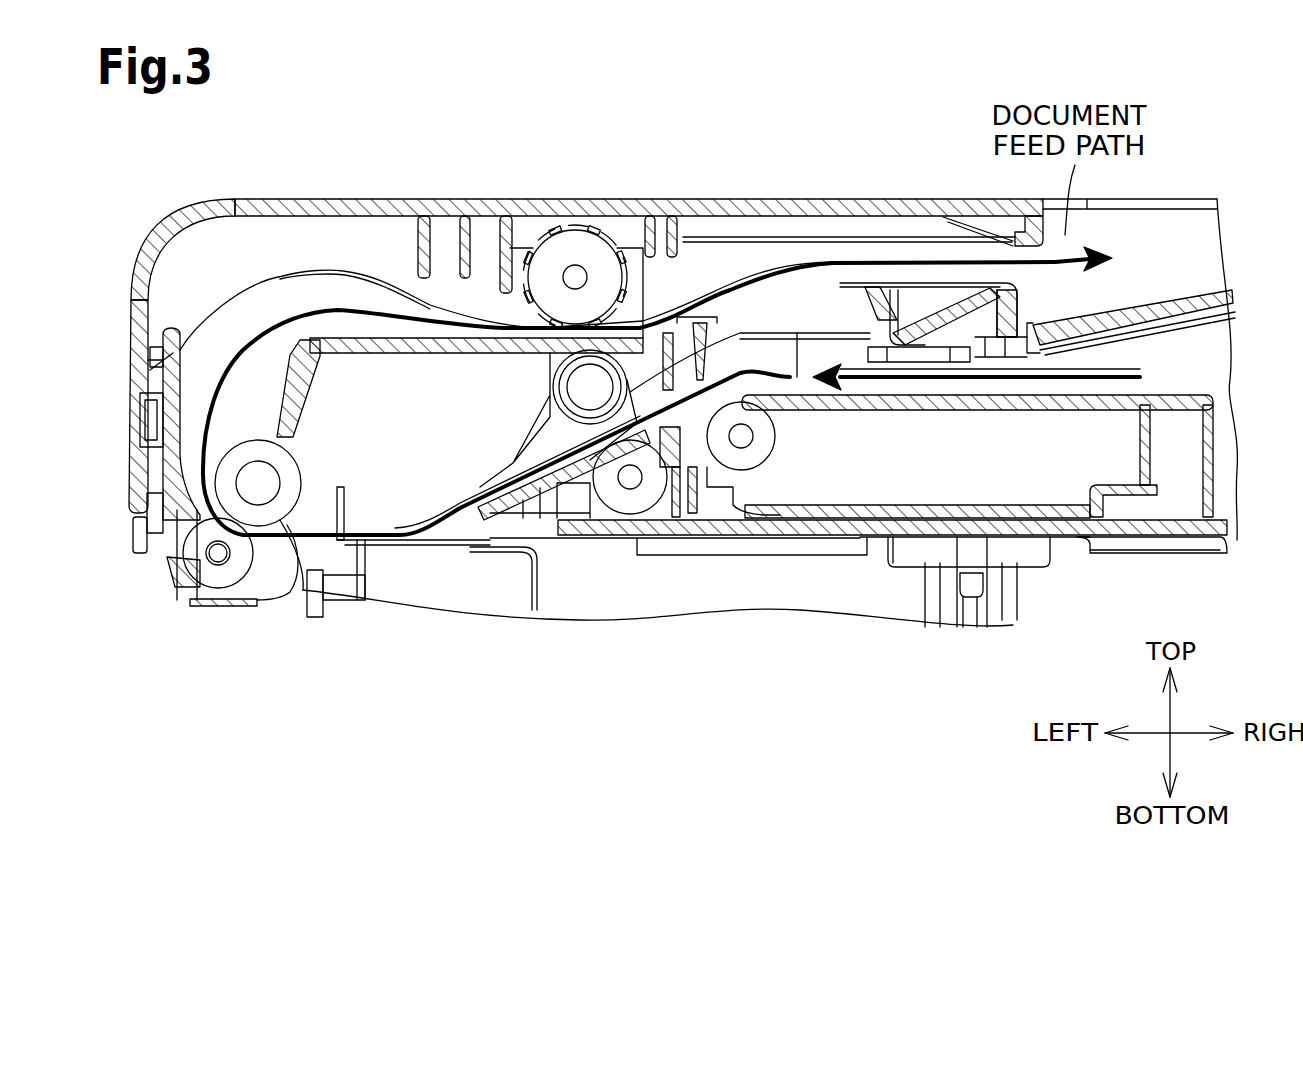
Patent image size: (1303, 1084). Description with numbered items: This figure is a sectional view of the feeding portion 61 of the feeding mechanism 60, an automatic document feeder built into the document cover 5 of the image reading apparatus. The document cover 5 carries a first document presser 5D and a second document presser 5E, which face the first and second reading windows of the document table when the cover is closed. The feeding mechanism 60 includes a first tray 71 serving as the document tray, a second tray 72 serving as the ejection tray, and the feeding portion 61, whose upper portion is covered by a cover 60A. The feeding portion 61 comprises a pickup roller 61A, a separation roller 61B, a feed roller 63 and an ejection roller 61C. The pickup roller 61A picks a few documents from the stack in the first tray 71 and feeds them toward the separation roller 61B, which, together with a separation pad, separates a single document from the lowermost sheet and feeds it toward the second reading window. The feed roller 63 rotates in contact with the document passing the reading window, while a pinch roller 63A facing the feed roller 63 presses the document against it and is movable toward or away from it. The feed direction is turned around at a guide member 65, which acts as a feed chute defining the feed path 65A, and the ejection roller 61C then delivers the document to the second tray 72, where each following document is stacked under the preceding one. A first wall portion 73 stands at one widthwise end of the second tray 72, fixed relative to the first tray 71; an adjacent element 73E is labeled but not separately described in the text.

The document cover 5 is at (1160, 190).
The first document presser 5D is at (827, 538).
The second document presser 5E is at (367, 538).
The feeding mechanism 60 is at (587, 198).
The cover 60A is at (686, 205).
The feeding portion 61 is at (300, 290).
The pickup roller 61A is at (757, 457).
The separation roller 61B is at (620, 503).
The ejection roller 61C is at (588, 238).
The feed roller 63 is at (277, 517).
The pinch roller 63A is at (210, 583).
The guide member 65 is at (124, 500).
The feed path 65A is at (197, 410).
The first tray 71 is at (1197, 385).
The second tray 72 is at (1200, 290).
The first wall portion 73 is at (180, 618).
The engaging portion of roller holder 73E is at (158, 567).